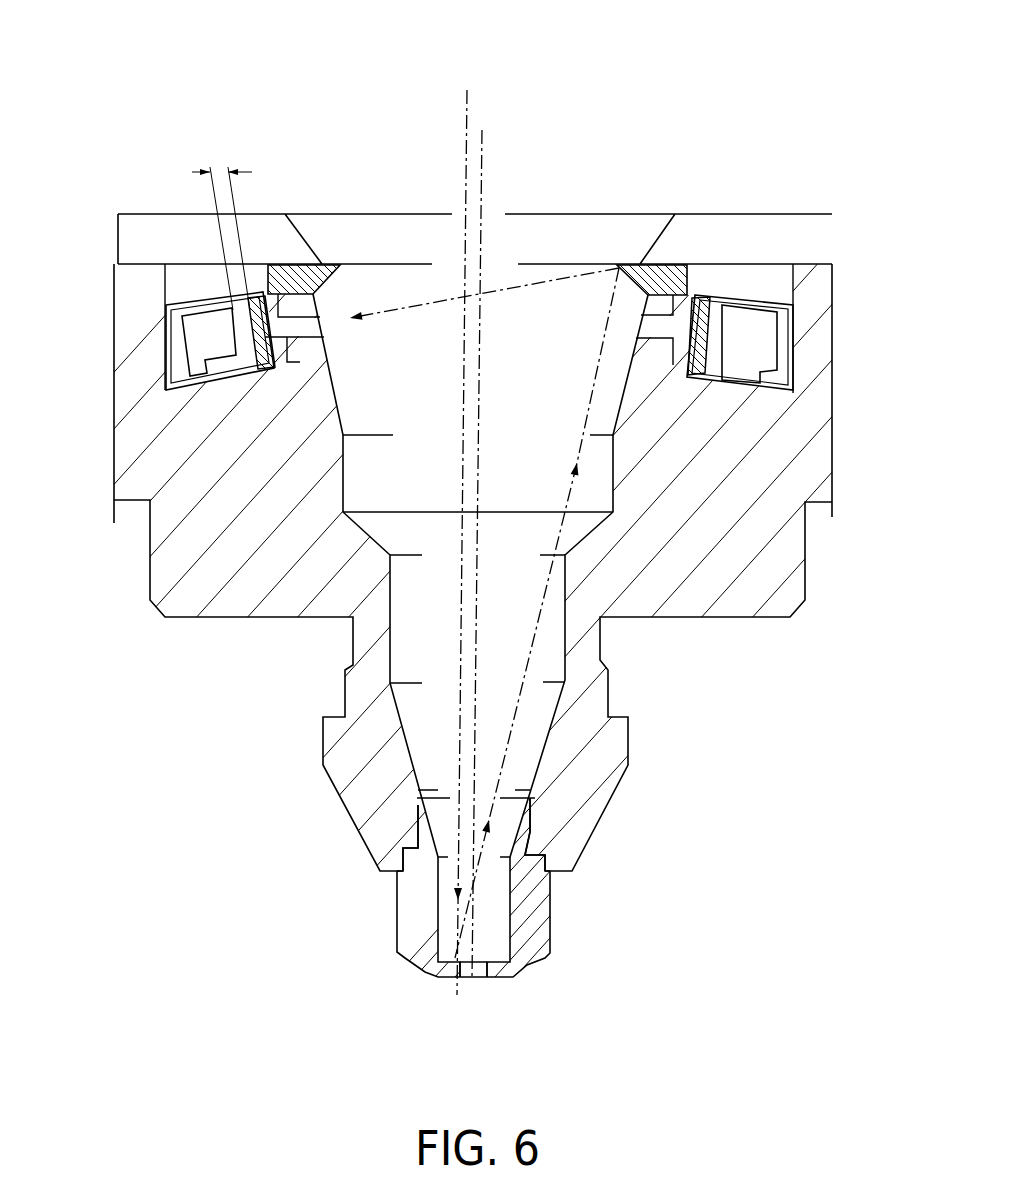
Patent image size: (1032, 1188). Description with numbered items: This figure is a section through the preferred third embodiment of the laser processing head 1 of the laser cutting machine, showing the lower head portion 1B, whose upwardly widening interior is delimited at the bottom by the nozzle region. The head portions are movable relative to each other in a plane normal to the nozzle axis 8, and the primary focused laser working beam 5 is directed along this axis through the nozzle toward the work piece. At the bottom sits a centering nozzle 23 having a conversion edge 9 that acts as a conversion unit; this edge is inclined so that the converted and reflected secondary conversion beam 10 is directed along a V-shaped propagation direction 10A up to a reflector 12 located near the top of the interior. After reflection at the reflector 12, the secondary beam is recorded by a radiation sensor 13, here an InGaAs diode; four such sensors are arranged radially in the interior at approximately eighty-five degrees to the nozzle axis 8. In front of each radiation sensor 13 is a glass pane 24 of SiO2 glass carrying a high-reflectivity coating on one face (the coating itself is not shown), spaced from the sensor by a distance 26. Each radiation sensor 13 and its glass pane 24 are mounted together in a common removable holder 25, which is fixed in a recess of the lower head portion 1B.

The laser processing head 1 is at (326, 122).
The lower head portion 1B is at (747, 583).
The laser working beam 5 is at (462, 150).
The nozzle axis 8 is at (484, 163).
The conversion edge 9 is at (443, 937).
The secondary conversion beam 10 is at (568, 590).
The V-shaped propagation direction 10A is at (517, 733).
The reflector 12 is at (650, 262).
The radiation sensor 13 is at (752, 345).
The centering nozzle 23 is at (553, 937).
The glass pane 24 is at (703, 367).
The holder 25 is at (793, 388).
The distance 26 is at (242, 230).